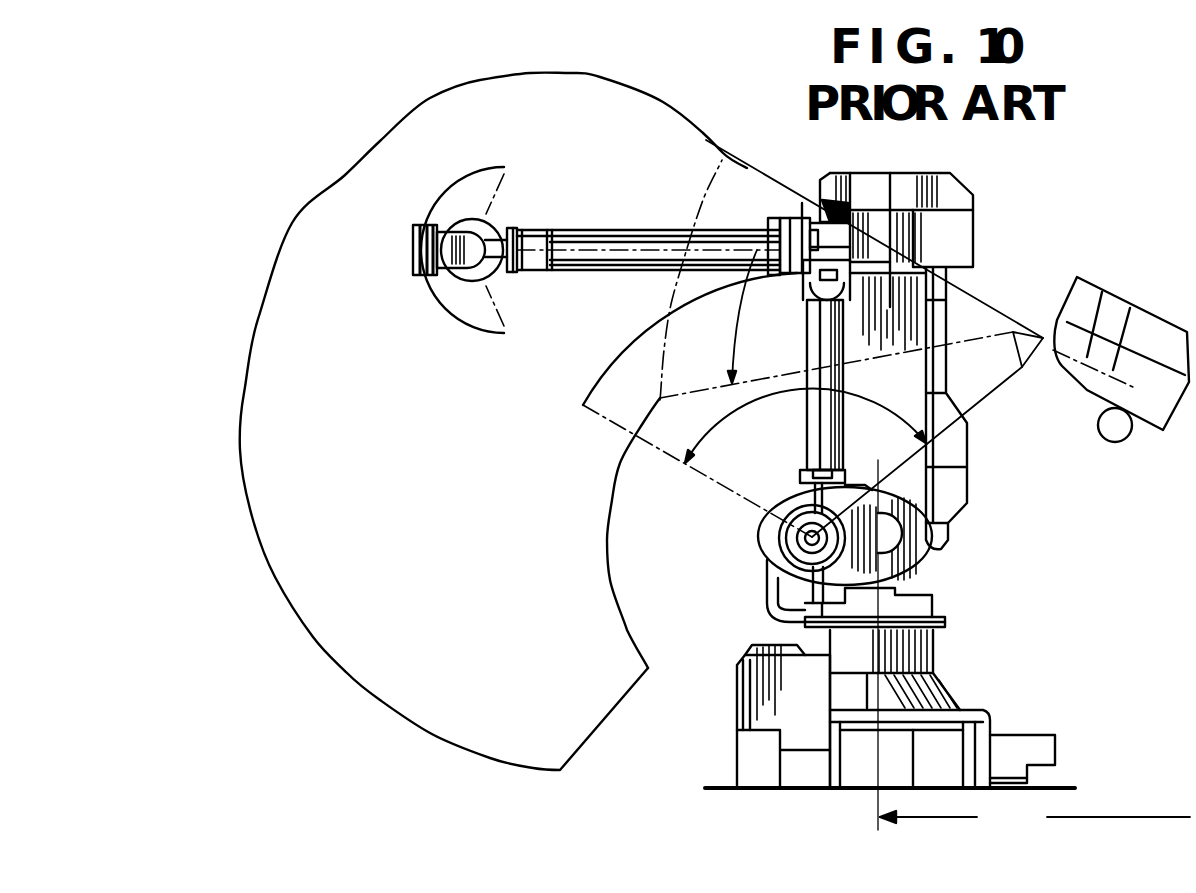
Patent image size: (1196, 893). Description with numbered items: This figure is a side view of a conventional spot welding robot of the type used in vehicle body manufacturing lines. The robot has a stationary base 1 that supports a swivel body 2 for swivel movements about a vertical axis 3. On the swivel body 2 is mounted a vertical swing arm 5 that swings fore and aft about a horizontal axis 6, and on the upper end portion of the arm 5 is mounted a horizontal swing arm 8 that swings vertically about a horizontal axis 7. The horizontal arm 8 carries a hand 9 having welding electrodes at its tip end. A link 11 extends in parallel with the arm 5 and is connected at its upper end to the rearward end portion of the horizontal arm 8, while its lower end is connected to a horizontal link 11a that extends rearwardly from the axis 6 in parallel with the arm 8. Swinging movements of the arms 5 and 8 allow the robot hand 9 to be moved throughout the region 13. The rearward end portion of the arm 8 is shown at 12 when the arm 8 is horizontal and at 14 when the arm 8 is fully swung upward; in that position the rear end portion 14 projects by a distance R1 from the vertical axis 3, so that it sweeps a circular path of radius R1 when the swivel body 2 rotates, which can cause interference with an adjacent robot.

The stationary base 1 is at (943, 703).
The swivel body 2 is at (905, 606).
The vertical axis 3 is at (910, 660).
The vertical swing arm 5 is at (808, 356).
The horizontal axis 6 is at (765, 571).
The horizontal axis 7 is at (801, 205).
The horizontal swing arm 8 is at (621, 241).
The hand 9 is at (470, 262).
The link 11 is at (944, 376).
The horizontal link 11a is at (937, 549).
The rearward end portion of the arm 12 is at (963, 230).
The region 13 is at (240, 470).
The rearward end portion of the arm 14 is at (1160, 327).
The distance R1 is at (1035, 817).